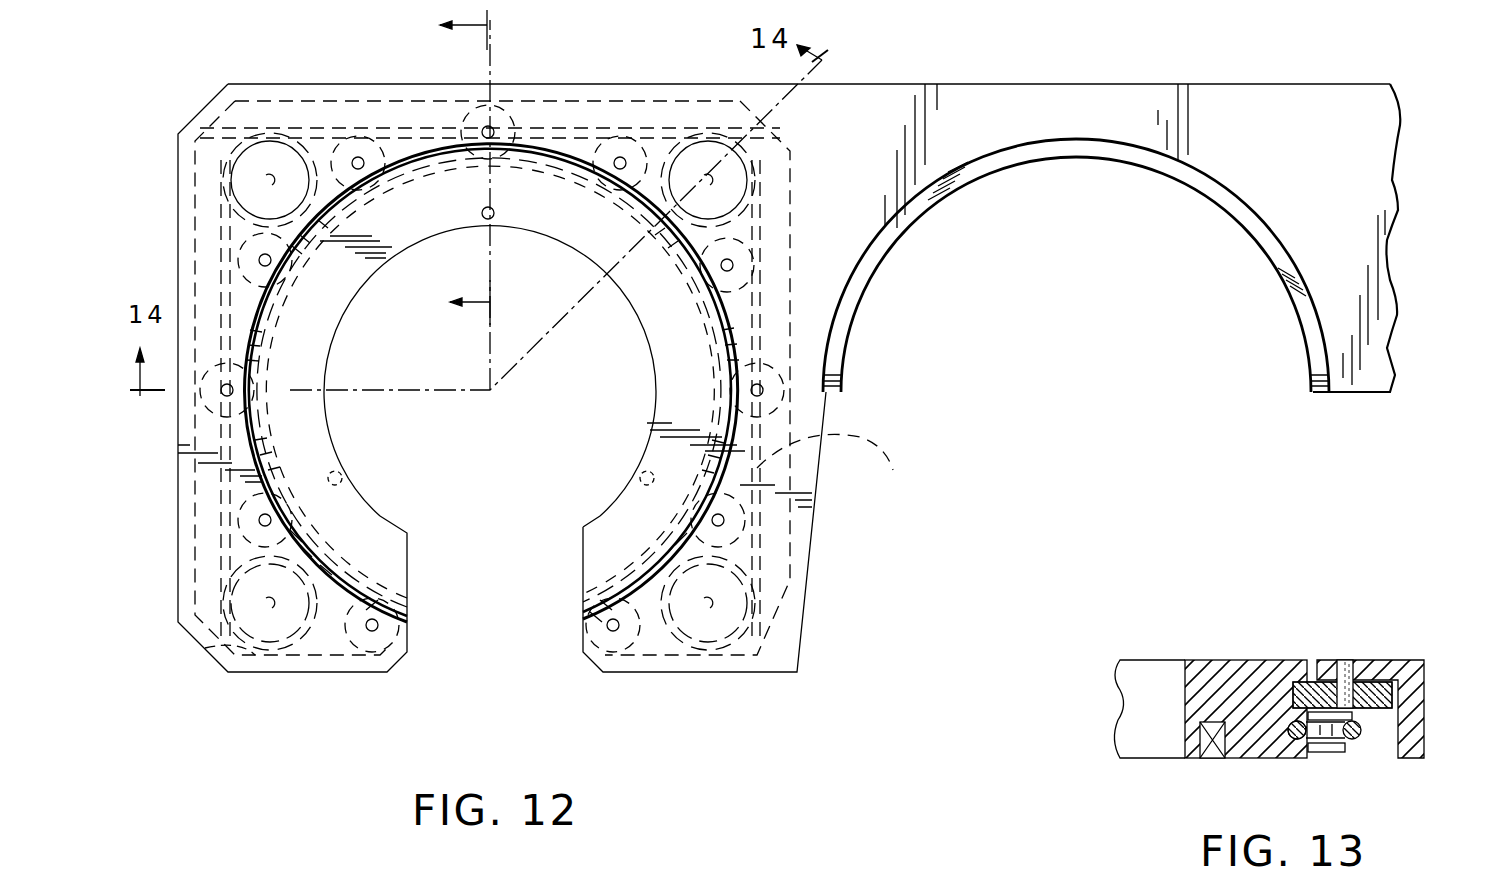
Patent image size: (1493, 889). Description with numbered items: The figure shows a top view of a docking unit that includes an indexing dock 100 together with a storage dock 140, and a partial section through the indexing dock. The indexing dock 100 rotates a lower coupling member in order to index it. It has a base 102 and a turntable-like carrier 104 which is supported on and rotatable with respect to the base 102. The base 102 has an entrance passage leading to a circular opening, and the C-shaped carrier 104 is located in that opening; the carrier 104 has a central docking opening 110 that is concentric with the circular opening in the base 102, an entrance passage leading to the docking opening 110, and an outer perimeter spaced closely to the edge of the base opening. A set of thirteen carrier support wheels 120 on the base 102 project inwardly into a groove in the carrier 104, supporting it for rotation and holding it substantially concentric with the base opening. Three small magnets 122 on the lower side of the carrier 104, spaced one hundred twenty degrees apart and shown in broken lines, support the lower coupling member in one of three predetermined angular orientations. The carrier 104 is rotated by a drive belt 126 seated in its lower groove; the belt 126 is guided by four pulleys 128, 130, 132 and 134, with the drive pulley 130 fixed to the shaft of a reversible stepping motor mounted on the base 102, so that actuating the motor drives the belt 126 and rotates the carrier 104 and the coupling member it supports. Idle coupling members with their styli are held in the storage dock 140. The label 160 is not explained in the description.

In FIG. 12, the indexing dock 100 is at (578, 710).
In FIG. 12, the base 102 is at (638, 662).
In FIG. 13, the base 102 is at (1412, 668).
In FIG. 12, the carrier 104 is at (378, 528).
In FIG. 13, the carrier 104 is at (1272, 675).
In FIG. 12, the docking opening 110 is at (490, 371).
In FIG. 12, the carrier support wheels 120 is at (366, 172).
In FIG. 13, the carrier support wheels 120 is at (1378, 688).
In FIG. 12, the magnets 122 is at (497, 209).
In FIG. 13, the magnets 122 is at (1212, 755).
In FIG. 12, the drive belt 126 is at (190, 680).
In FIG. 13, the drive belt 126 is at (1345, 748).
In FIG. 12, the pulley 128 is at (268, 150).
In FIG. 12, the drive pulley 130 is at (708, 160).
In FIG. 12, the pulley 132 is at (305, 648).
In FIG. 12, the pulley 134 is at (728, 665).
In FIG. 12, the storage dock 140 is at (1072, 352).
In FIG. 12, the gap 160 is at (492, 625).